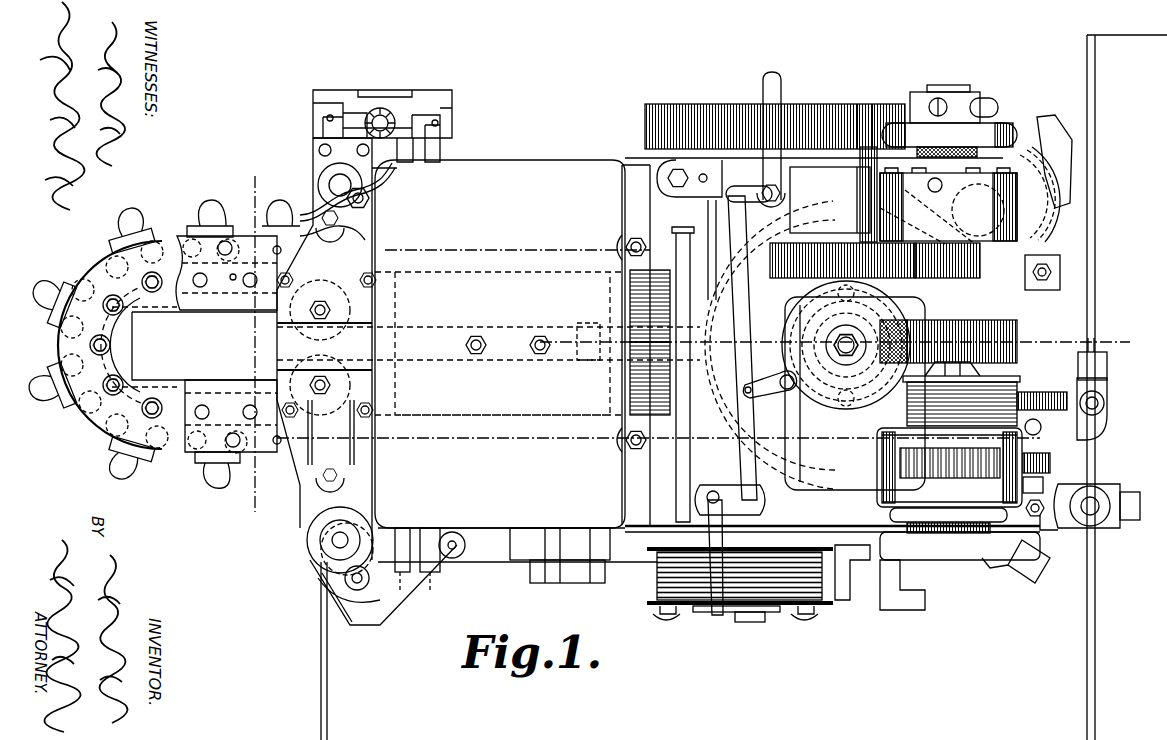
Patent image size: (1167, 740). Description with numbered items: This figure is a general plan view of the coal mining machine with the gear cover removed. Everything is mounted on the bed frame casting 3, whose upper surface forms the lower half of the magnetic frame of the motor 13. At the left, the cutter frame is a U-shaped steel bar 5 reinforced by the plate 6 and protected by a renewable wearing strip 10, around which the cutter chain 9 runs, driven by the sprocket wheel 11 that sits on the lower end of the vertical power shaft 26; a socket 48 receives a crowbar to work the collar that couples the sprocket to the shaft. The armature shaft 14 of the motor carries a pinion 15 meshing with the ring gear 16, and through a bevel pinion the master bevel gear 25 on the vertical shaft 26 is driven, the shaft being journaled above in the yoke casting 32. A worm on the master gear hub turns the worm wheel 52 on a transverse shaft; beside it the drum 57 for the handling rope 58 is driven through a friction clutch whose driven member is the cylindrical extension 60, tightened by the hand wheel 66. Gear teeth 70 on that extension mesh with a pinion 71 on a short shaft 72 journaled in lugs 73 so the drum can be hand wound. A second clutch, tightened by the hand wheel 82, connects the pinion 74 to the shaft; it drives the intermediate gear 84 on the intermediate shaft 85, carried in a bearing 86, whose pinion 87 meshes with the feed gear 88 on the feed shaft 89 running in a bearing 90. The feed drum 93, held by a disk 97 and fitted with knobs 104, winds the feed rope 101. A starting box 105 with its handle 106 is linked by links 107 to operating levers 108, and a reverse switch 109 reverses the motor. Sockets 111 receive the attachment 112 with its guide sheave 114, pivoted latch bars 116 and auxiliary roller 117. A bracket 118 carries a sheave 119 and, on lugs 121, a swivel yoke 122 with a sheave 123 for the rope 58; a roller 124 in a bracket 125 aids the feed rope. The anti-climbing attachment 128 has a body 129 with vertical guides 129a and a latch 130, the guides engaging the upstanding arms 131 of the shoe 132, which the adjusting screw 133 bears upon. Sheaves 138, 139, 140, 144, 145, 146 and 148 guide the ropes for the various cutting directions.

The bed frame casting 3 is at (625, 580).
The steel bar 5 is at (233, 275).
The plate 6 is at (199, 232).
The cutter chain 9 is at (273, 224).
The renewable wearing strip 10 is at (112, 292).
The sprocket wheel 11 is at (846, 405).
The motor 13 is at (658, 344).
The armature shaft 14 is at (560, 338).
The pinion 15 is at (640, 368).
The ring gear 16 is at (650, 287).
The master bevel gear 25 is at (818, 490).
The vertical power shaft 26 is at (848, 336).
The yoke casting 32 is at (832, 517).
The socket 48 is at (1028, 292).
The worm wheel 52 is at (1017, 333).
The drum 57 is at (1007, 378).
The rope 58 is at (1092, 242).
The cylindrical extension 60 is at (1050, 455).
The hand wheel 66 is at (990, 568).
The gear teeth 70 is at (1043, 485).
The pinion 71 is at (1050, 462).
The short shaft 72 is at (1047, 518).
The lugs 73 is at (1045, 503).
The pinion 74 is at (985, 260).
The hand wheel 82 is at (1009, 135).
The intermediate gear 84 is at (773, 273).
The intermediate shaft 85 is at (912, 182).
The bearing 86 is at (880, 120).
The pinion 87 is at (860, 86).
The feed gear 88 is at (787, 104).
The feed shaft 89 is at (727, 222).
The bearing 90 is at (700, 185).
The feed drum 93 is at (783, 612).
The disk 97 is at (762, 612).
The feed rope 101 is at (494, 563).
The knobs 104 is at (666, 620).
The starting box 105 is at (692, 447).
The handle 106 is at (760, 392).
The links 107 is at (740, 455).
The operating levers 108 is at (771, 96).
The reverse switch 109 is at (577, 562).
The sockets 111 is at (408, 150).
The attachment 112 is at (367, 614).
The guide sheave 114 is at (315, 580).
The pivoted latch bars 116 is at (401, 577).
The auxiliary roller 117 is at (454, 558).
The bracket 118 is at (1017, 392).
The sheave 119 is at (1035, 395).
The lugs 121 is at (1108, 407).
The swivel yoke 122 is at (1107, 363).
The sheave 123 is at (1097, 350).
The roller 124 is at (850, 583).
The bracket 125 is at (895, 603).
The attachment 128 is at (384, 108).
The body 129 is at (350, 110).
The vertical guides 129a is at (327, 116).
The latch 130 is at (388, 100).
The upstanding arms 131 is at (323, 127).
The shoe 132 is at (333, 100).
The adjusting screw 133 is at (366, 90).
The sheave 138 is at (1040, 195).
The sheave 139 is at (315, 544).
The sheave 140 is at (310, 478).
The sheave 144 is at (1027, 537).
The sheave 145 is at (332, 163).
The sheave 146 is at (318, 237).
The sheave 148 is at (1103, 532).